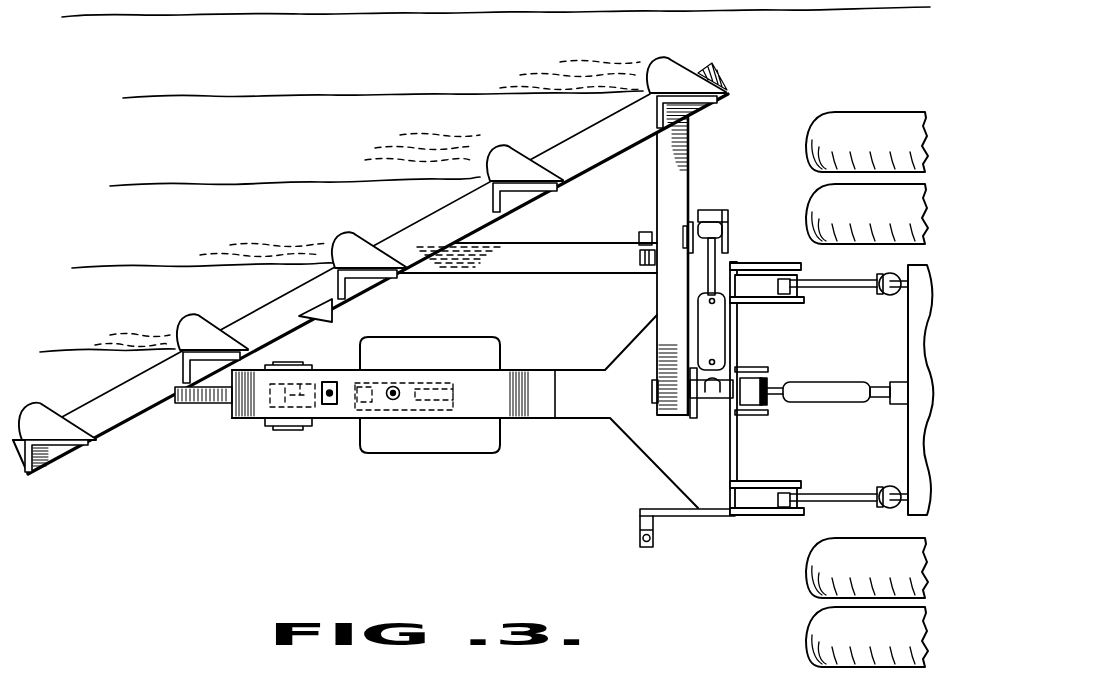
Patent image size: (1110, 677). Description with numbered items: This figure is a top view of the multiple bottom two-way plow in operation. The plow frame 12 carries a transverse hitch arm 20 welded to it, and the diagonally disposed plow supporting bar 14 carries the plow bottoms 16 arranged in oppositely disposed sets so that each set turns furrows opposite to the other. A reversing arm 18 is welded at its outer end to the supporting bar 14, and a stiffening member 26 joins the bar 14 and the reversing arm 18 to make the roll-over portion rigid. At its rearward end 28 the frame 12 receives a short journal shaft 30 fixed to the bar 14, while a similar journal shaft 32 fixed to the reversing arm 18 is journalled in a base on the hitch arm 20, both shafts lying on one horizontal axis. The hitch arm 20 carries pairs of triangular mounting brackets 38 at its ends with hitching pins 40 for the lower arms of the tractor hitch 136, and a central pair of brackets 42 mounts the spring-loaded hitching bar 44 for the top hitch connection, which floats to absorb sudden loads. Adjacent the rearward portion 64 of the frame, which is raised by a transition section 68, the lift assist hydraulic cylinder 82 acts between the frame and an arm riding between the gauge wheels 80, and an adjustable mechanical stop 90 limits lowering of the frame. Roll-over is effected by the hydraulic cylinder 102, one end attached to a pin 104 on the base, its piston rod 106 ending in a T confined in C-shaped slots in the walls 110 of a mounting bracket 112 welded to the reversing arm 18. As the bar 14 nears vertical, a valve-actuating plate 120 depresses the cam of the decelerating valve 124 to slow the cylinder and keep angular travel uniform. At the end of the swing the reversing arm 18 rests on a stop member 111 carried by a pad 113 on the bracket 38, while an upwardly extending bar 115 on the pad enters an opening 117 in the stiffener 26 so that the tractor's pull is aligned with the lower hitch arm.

The plow frame 12 is at (582, 420).
The plow supporting bar 14 is at (418, 227).
The plow bottoms 16 is at (36, 402).
The reversing arm 18 is at (690, 137).
The hitch arm 20 is at (731, 333).
The stiffening member 26 is at (545, 248).
The rearward end of plow frame 28 is at (231, 418).
The journal shaft 30 is at (198, 405).
The journal shaft 32 is at (682, 410).
The mounting brackets 38 is at (752, 265).
The hitching pins 40 is at (793, 282).
The mounting brackets 42 is at (770, 368).
The hitching bar 44 is at (800, 384).
The rearward portion of plow frame 64 is at (302, 412).
The transition section 68 is at (540, 372).
The gauge wheels 80 is at (447, 340).
The hydraulic cylinder 82 is at (348, 405).
The mechanical stop 90 is at (393, 401).
The hydraulic cylinder 102 is at (722, 352).
The pin 104 is at (713, 398).
The piston rod 106 is at (718, 233).
The walls of mounting bracket 110 is at (728, 218).
The stop member 111 is at (648, 548).
The mounting bracket 112 is at (708, 213).
The pad 113 is at (641, 541).
The bar 115 is at (637, 258).
The opening 117 is at (648, 268).
The valve-actuating plate 120 is at (334, 315).
The decelerating valve 124 is at (331, 380).
The tractor hitch 136 is at (833, 510).